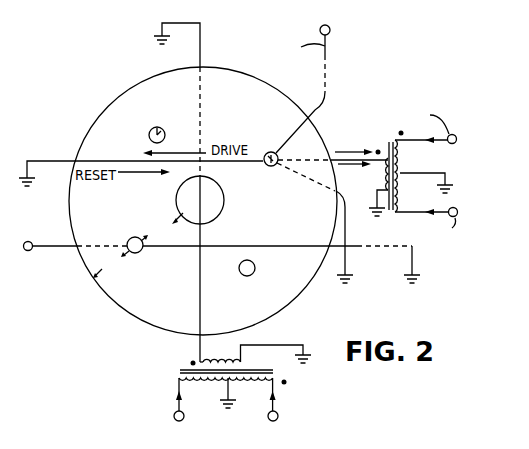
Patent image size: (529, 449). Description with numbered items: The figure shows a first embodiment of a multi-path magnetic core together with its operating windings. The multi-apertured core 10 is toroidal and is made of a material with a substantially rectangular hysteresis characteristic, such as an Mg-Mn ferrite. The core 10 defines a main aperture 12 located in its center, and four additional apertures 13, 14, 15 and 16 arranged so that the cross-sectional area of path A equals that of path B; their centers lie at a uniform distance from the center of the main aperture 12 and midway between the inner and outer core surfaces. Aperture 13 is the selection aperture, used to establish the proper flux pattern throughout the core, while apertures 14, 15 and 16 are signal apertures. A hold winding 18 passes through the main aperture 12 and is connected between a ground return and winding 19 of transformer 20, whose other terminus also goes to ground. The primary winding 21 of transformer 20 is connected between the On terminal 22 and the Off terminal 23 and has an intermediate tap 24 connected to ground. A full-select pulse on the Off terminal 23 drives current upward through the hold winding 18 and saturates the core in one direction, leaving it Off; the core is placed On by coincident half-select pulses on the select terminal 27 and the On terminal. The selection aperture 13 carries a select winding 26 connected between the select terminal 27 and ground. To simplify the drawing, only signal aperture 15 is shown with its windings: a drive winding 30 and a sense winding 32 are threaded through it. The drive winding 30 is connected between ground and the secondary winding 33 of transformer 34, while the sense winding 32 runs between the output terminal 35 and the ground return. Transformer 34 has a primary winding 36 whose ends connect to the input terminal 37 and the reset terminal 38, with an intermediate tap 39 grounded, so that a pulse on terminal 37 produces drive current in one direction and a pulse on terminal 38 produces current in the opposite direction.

The multi-apertured core 10 is at (121, 293).
The main aperture 12 is at (222, 211).
The selection aperture 13 is at (140, 253).
The signal aperture 14 is at (155, 127).
The signal aperture 15 is at (272, 152).
The signal aperture 16 is at (254, 275).
The hold winding 18 is at (201, 37).
The winding of transformer 20 19 is at (218, 362).
The transformer 20 is at (183, 366).
The primary winding 21 is at (268, 385).
The On terminal 22 is at (173, 417).
The Off terminal 23 is at (279, 416).
The intermediate tap 24 is at (226, 396).
The select winding 26 is at (284, 246).
The select terminal 27 is at (29, 242).
The drive winding 30 is at (42, 160).
The sense winding 32 is at (315, 113).
The secondary winding 33 is at (377, 189).
The transformer 34 is at (392, 212).
The output terminal 35 is at (331, 30).
The primary winding 36 is at (405, 198).
The input terminal 37 is at (449, 144).
The reset terminal 38 is at (456, 211).
The intermediate tap 39 is at (445, 172).